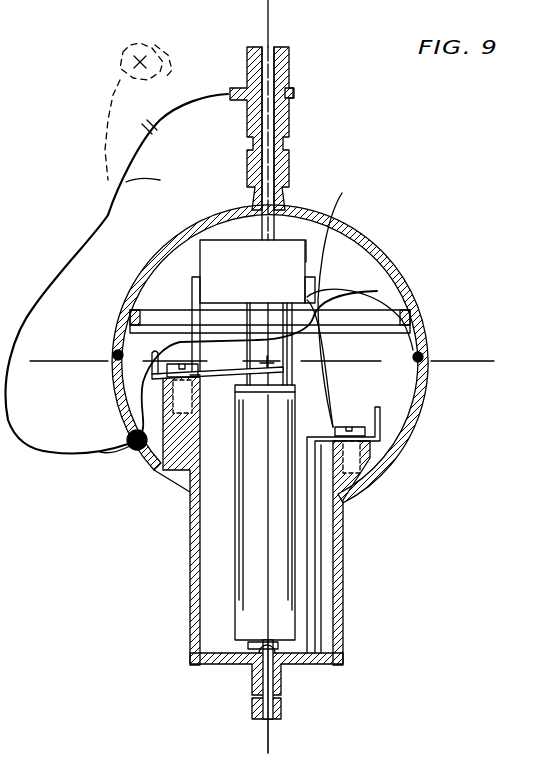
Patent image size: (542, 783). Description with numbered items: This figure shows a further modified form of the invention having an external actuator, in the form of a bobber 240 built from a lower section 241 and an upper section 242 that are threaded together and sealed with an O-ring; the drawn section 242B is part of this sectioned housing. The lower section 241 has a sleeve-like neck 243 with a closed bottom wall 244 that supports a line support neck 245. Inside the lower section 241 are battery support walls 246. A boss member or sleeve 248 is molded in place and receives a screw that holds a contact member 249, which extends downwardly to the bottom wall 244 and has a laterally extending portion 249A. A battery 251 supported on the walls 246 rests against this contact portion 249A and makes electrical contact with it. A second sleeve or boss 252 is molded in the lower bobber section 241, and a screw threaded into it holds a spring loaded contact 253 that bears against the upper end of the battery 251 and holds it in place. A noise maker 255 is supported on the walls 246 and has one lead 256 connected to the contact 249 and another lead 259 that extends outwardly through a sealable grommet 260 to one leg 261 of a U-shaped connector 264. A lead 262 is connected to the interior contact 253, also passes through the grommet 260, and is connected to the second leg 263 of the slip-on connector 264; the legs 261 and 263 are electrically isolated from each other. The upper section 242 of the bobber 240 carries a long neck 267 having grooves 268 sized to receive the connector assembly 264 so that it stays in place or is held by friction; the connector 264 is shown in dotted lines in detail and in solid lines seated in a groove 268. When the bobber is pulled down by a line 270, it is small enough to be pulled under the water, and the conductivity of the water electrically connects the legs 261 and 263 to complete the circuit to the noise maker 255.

The bobber 240 is at (405, 275).
The lower section 241 is at (411, 437).
The upper section 242 is at (377, 243).
The lower hemisphere of housing 242B is at (419, 346).
The sleeve-like neck 243 is at (343, 562).
The bottom wall 244 is at (304, 663).
The line support neck 245 is at (250, 708).
The battery support walls 246 is at (311, 405).
The boss member or sleeve 248 is at (361, 455).
The contact member 249 is at (341, 533).
The laterally extending portion 249A is at (296, 650).
The battery 251 is at (240, 629).
The second sleeve or boss 252 is at (150, 456).
The spring loaded contact 253 is at (113, 405).
The noise maker 255 is at (306, 262).
The lead 256 is at (377, 291).
The lead 259 is at (218, 336).
The sealable grommet 260 is at (126, 438).
The leg 261 is at (108, 60).
The lead 262 is at (172, 198).
The second leg 263 is at (176, 75).
The U-shaped connector 264 is at (296, 94).
The long neck 267 is at (290, 128).
The grooves 268 is at (285, 148).
The line 270 is at (271, 740).